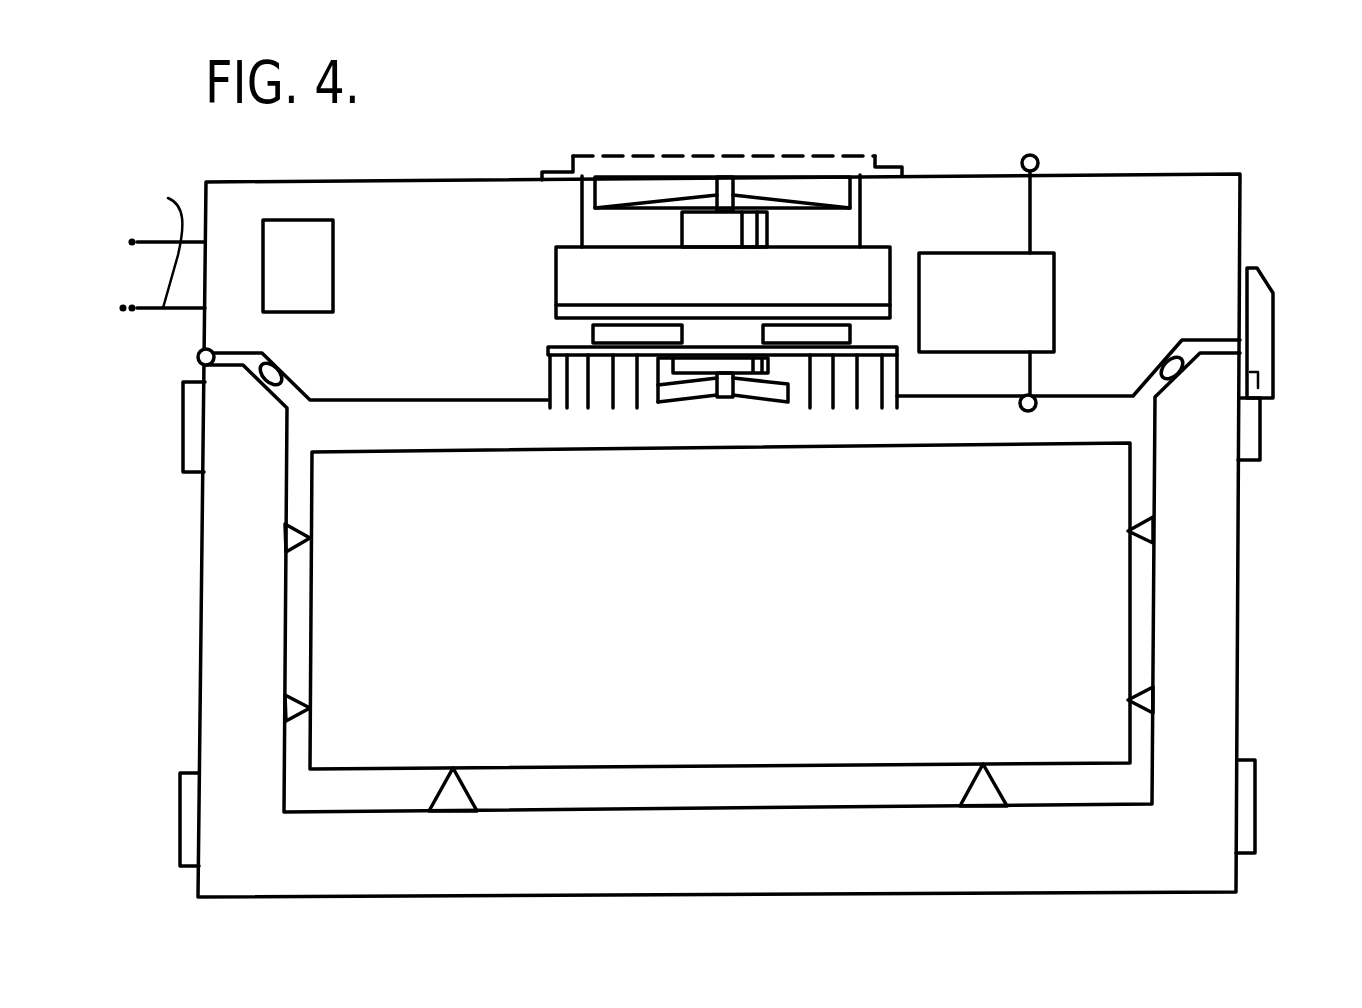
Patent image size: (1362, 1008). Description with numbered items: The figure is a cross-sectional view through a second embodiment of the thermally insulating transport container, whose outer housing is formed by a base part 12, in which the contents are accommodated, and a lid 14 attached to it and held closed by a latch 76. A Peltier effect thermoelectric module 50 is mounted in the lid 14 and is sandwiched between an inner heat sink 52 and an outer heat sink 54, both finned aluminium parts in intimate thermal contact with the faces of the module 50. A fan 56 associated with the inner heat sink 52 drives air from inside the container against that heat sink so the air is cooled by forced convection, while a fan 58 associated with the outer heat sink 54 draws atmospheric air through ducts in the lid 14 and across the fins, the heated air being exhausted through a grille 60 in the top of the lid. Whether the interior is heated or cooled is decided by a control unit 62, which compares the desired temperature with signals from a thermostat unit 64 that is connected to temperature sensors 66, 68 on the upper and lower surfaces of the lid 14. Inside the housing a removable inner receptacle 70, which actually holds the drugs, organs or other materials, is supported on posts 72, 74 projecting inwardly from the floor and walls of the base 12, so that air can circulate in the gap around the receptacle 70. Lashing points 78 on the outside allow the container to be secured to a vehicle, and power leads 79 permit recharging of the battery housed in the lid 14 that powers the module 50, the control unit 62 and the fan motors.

The base part 12 is at (1212, 870).
The lid 14 is at (1228, 188).
The Peltier effect thermoelectric module 50 is at (828, 333).
The inner heat sink 52 is at (590, 378).
The outer heat sink 54 is at (825, 258).
The fan 56 is at (673, 390).
The fan 58 is at (807, 182).
The grille 60 is at (650, 155).
The control unit 62 is at (302, 268).
The thermostat unit 64 is at (1007, 290).
The temperature sensor 66 is at (1038, 158).
The temperature sensor 68 is at (1038, 403).
The inner receptacle 70 is at (757, 623).
The post 72 is at (983, 792).
The post 74 is at (1143, 533).
The latch 76 is at (1273, 292).
The lashing point 78 is at (187, 451).
The power leads 79 is at (170, 242).